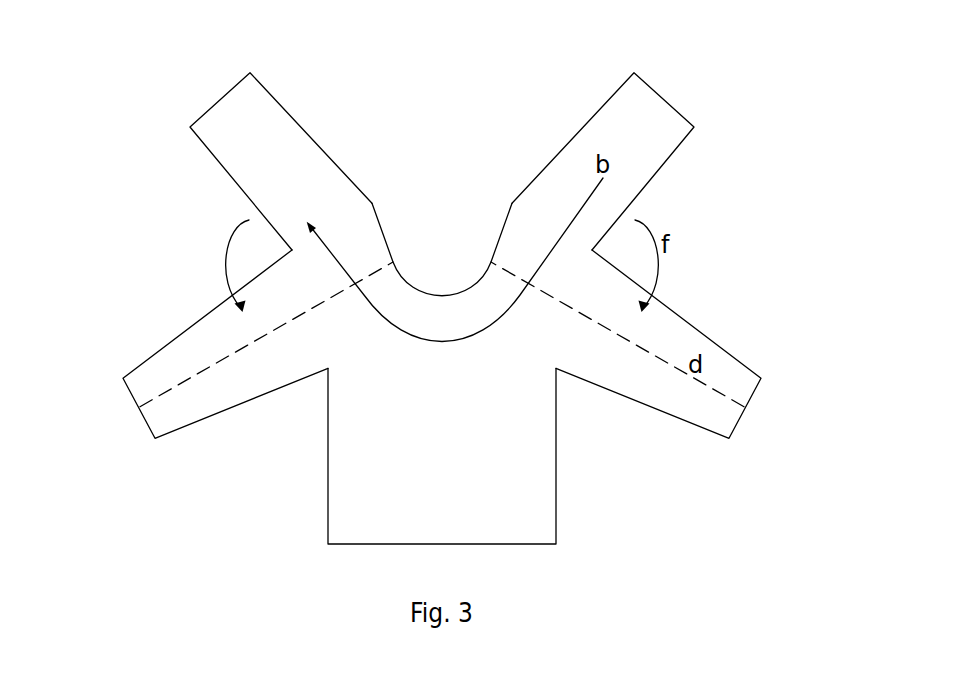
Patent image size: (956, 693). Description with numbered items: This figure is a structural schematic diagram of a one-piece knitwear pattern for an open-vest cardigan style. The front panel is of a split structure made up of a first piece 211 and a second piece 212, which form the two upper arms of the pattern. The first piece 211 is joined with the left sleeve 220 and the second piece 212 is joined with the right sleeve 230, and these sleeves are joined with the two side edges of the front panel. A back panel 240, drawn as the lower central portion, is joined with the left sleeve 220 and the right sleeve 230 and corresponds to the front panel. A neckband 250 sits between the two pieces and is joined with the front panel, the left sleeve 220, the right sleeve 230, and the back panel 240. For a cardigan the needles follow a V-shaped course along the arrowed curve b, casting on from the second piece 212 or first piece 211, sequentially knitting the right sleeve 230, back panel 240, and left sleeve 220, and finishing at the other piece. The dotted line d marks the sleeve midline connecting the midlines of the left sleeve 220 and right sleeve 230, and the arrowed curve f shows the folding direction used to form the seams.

The first piece 211 is at (287, 123).
The second piece 212 is at (640, 180).
The left sleeve 220 is at (225, 317).
The right sleeve 230 is at (662, 312).
The back panel 240 is at (547, 497).
The neckband 250 is at (444, 250).